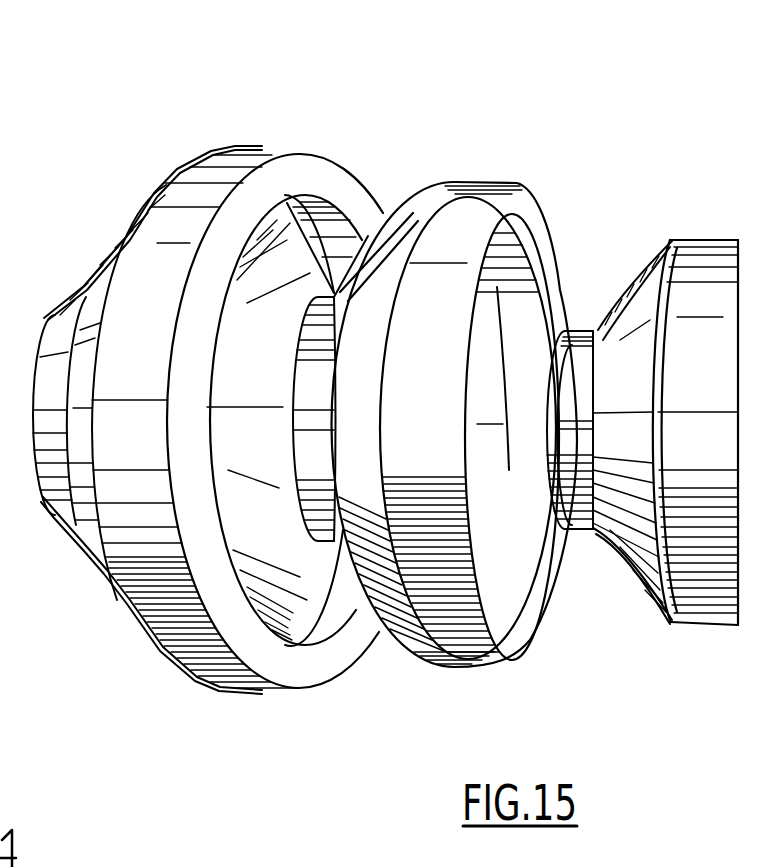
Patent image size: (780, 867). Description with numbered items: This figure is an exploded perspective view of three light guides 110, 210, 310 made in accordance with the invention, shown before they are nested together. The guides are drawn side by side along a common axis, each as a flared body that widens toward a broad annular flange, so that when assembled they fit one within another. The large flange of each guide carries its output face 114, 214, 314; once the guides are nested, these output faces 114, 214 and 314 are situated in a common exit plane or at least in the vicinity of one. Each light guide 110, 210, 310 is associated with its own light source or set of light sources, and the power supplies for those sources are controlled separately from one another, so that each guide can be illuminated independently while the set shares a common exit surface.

The light guide 110 is at (230, 698).
The output face 114 is at (318, 180).
The light guide 210 is at (440, 657).
The output face 214 is at (523, 217).
The light guide 310 is at (655, 630).
The output face 314 is at (738, 265).